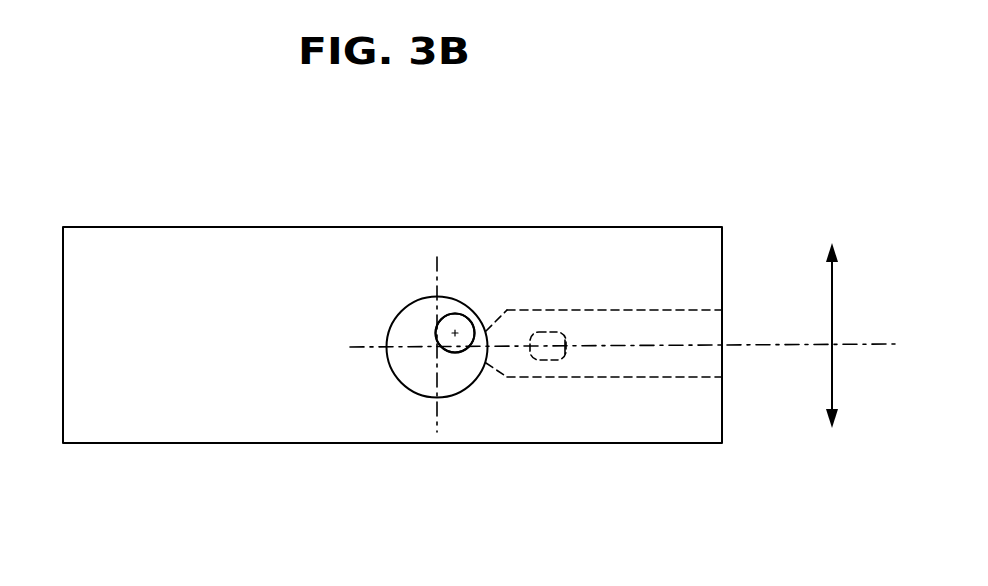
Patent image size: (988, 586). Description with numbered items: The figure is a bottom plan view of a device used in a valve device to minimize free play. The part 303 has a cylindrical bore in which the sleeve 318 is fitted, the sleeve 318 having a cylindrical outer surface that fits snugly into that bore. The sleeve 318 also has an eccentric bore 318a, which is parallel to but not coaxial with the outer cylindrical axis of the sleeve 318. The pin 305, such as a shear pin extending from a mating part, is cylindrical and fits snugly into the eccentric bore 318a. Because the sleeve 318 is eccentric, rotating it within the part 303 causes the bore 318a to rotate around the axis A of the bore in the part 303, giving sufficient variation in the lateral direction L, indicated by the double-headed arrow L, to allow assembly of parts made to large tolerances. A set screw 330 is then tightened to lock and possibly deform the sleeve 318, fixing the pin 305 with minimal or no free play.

The part 303 is at (201, 435).
The pin 305 is at (455, 314).
The sleeve 318 is at (423, 370).
The eccentric bore 318a is at (467, 318).
The set screw 330 is at (647, 368).
The axis A is at (372, 347).
The lateral direction L is at (833, 305).